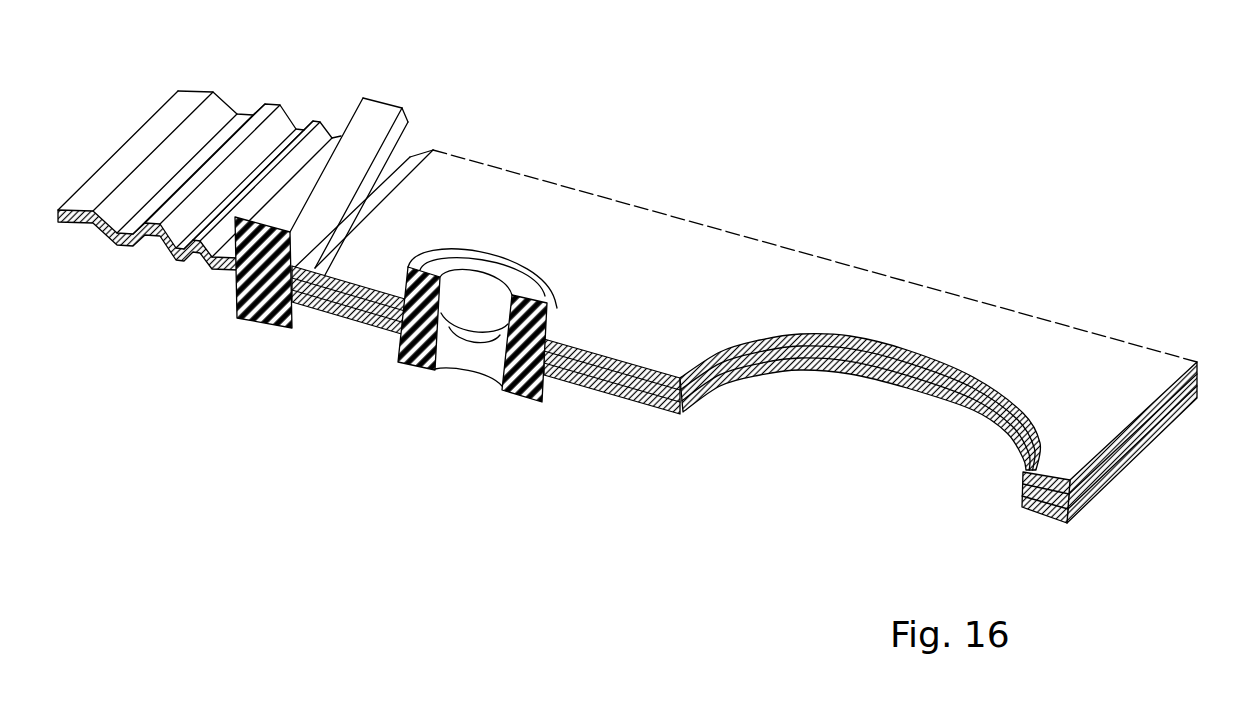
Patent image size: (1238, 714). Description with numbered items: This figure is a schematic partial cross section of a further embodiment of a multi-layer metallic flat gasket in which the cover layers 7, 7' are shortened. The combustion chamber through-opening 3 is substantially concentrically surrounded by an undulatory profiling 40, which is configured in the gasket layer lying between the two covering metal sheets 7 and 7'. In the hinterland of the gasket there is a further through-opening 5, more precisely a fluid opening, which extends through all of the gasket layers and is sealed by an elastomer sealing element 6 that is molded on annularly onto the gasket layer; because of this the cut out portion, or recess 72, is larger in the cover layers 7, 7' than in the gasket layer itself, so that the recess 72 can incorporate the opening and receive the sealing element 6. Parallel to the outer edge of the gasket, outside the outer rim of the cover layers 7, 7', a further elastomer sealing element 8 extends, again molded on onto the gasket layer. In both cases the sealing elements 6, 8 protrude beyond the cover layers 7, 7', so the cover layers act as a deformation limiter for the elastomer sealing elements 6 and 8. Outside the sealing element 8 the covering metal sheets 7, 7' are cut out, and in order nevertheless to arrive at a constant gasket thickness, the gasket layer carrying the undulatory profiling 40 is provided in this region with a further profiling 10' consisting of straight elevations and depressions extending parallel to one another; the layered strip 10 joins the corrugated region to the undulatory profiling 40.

The combustion chamber through-opening 3 is at (814, 430).
The further through-opening 5 is at (455, 391).
The elastomer sealing element 6 is at (483, 260).
The cover layer 7 is at (744, 336).
The cover layer 7' is at (1072, 522).
The further elastomer sealing element 8 is at (360, 120).
The strip 10 is at (476, 340).
The further profiling 10' is at (199, 209).
The undulatory profiling 40 is at (1023, 490).
The recess 72 is at (465, 410).